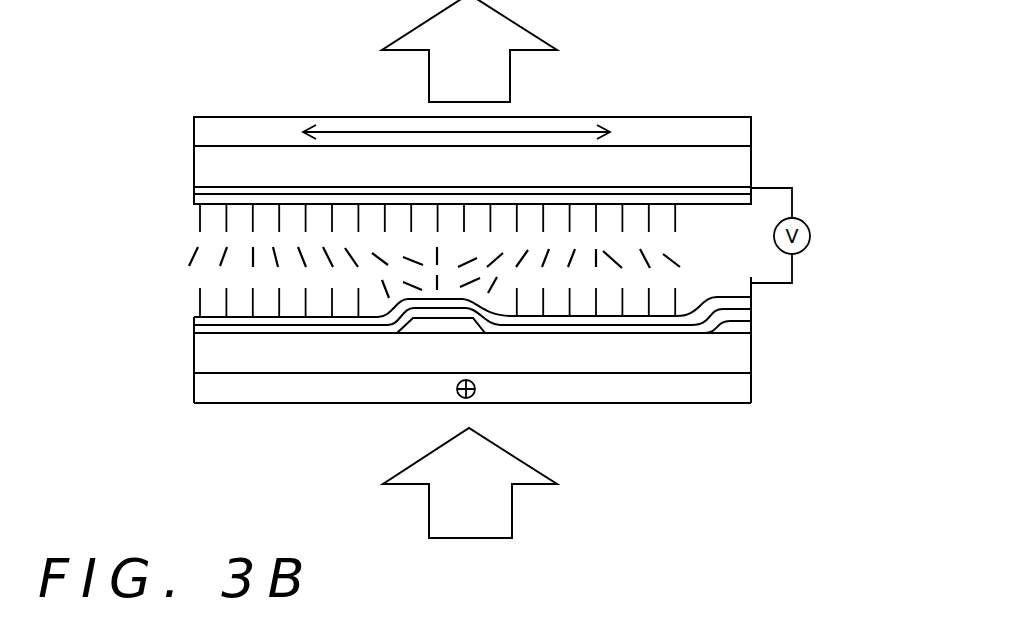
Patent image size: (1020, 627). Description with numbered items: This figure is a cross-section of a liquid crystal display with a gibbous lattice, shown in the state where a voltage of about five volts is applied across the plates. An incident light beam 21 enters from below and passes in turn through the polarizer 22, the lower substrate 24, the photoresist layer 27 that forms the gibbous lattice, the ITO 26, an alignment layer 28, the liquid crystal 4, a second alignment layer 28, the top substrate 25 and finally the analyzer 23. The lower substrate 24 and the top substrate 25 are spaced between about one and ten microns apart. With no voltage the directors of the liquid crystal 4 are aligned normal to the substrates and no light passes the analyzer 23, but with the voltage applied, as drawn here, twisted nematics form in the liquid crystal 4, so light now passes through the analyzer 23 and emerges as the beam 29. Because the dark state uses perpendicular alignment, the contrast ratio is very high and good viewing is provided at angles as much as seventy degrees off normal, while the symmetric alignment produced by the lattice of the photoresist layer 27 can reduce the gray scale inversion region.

The liquid crystal 4 is at (612, 250).
The incident light beam 21 is at (483, 521).
The polarizer 22 is at (650, 385).
The analyzer 23 is at (750, 135).
The lower substrate 24 is at (750, 358).
The top substrate 25 is at (750, 168).
The ITO 26 is at (750, 310).
The photoresist layer 27 is at (750, 327).
The alignment layer 28 is at (750, 205).
The emerging light beam 29 is at (482, 33).